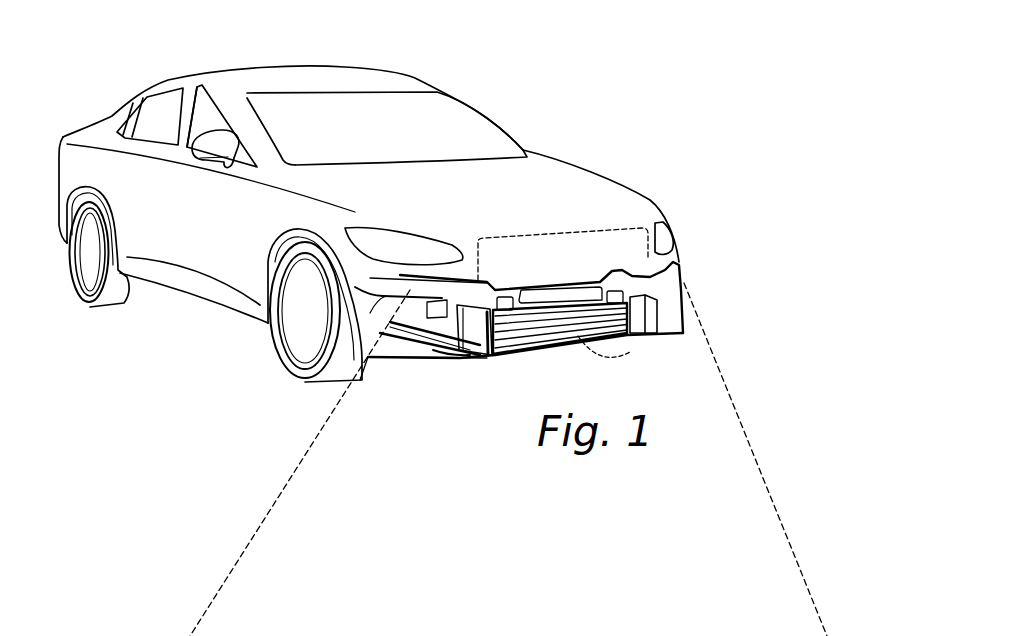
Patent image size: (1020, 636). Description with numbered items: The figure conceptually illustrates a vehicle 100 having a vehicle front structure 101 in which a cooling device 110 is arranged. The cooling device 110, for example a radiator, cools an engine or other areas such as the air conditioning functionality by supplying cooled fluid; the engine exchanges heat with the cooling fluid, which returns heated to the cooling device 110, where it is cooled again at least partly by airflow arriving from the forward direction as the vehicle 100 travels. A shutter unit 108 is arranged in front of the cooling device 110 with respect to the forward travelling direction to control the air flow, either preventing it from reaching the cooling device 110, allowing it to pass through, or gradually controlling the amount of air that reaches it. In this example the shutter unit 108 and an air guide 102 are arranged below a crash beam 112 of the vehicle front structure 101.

The vehicle 100 is at (600, 68).
The vehicle front structure 101 is at (700, 221).
The air guide 102 is at (493, 353).
The shutter unit 108 is at (592, 324).
The cooling device 110 is at (460, 323).
The crash beam 112 is at (471, 290).